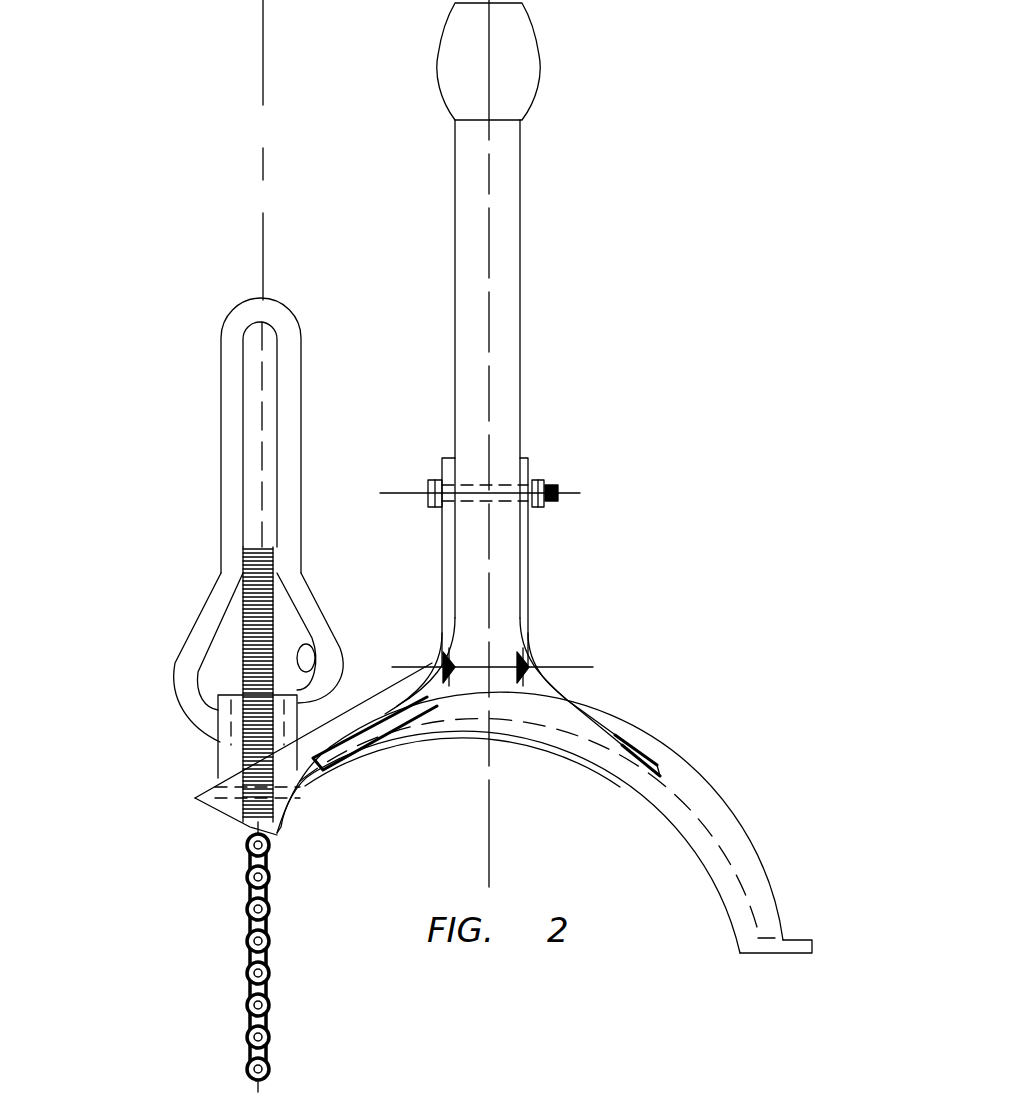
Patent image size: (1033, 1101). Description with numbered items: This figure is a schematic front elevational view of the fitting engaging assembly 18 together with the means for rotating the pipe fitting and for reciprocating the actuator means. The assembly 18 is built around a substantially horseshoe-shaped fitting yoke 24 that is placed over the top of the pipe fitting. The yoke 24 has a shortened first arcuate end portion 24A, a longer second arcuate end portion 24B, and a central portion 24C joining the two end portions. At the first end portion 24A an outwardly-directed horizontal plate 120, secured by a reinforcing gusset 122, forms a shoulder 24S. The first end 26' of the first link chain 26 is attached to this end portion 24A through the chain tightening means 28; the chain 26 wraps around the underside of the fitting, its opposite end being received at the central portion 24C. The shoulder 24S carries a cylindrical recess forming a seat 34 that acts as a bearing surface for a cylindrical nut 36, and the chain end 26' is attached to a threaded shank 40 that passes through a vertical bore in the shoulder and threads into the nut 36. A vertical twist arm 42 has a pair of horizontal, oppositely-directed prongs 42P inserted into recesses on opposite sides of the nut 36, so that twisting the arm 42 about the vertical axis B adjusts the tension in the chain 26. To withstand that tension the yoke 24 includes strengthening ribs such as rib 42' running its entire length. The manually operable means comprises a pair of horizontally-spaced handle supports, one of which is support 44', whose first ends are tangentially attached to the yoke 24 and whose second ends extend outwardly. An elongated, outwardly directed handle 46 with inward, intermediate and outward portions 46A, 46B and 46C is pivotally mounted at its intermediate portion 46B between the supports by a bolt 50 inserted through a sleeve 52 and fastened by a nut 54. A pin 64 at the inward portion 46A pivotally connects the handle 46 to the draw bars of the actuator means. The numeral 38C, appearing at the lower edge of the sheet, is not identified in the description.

The vertical axis B is at (262, 172).
The fitting engaging assembly 18 is at (572, 543).
The fitting yoke 24 is at (660, 732).
The first arcuate end portion 24A is at (293, 807).
The second arcuate end portion 24B is at (725, 908).
The central portion 24C is at (497, 745).
The shoulder 24S is at (250, 813).
The first link chain 26 is at (192, 963).
The first end of chain 26' is at (214, 857).
The chain tightening means 28 is at (165, 662).
The seat 34 is at (225, 760).
The cylindrical nut 36 is at (222, 742).
The chain coupling 38C is at (423, 1095).
The threaded shank 40 is at (250, 575).
The vertical twist arm 42 is at (210, 435).
The prongs 42P is at (312, 625).
The strengthening rib 42' is at (801, 848).
The handle support 44' is at (392, 561).
The handle 46 is at (497, 275).
The inward portion of handle 46A is at (480, 628).
The intermediate portion of handle 46B is at (475, 320).
The outward portion of handle 46C is at (510, 128).
The bolt 50 is at (435, 478).
The sleeve 52 is at (492, 483).
The nut 54 is at (560, 492).
The pin 64 is at (535, 655).
The horizontal plate 120 is at (197, 798).
The reinforcing gusset 122 is at (215, 786).